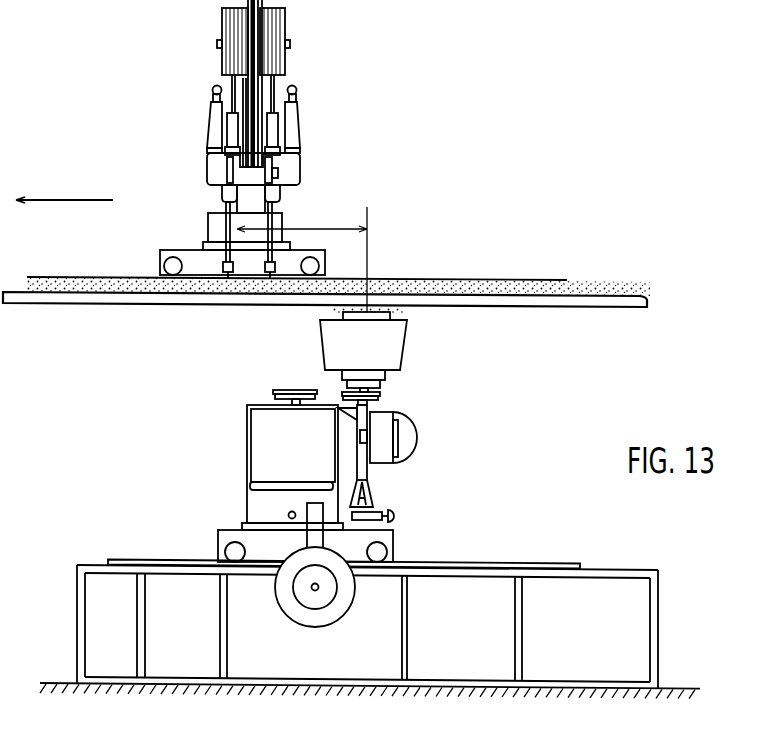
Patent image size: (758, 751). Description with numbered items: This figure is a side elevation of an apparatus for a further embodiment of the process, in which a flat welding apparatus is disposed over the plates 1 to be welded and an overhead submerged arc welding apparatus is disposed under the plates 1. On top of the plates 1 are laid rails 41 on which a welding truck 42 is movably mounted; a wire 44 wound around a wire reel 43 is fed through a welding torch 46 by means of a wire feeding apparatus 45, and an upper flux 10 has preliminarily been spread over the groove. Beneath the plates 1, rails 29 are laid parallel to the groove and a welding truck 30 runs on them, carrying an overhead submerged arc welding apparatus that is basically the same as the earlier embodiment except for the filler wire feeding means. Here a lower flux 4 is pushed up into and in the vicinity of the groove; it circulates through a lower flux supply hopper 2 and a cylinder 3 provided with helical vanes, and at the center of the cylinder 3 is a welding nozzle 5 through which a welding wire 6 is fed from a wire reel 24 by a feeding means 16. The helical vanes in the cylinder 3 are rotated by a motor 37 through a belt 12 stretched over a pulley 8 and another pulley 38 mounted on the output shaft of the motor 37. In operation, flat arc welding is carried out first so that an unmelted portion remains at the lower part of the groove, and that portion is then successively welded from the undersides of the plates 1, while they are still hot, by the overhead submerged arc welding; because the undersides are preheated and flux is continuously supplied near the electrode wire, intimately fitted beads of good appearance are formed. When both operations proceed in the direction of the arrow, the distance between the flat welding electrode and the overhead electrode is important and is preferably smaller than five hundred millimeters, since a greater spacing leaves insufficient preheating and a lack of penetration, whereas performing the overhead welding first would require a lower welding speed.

The plates to be welded 1 is at (585, 302).
The lower flux supply hopper 2 is at (386, 377).
The cylinder 3 is at (343, 321).
The lower flux 4 is at (400, 312).
The welding nozzle 5 is at (367, 320).
The welding wire 6 is at (363, 527).
The pulley 8 is at (343, 392).
The upper flux 10 is at (188, 282).
The belt 12 is at (320, 392).
The wire feeding means 16 is at (412, 438).
The wire reel 24 is at (282, 592).
The rails 29 is at (160, 560).
The welding truck 30 is at (267, 537).
The motor 37 is at (250, 423).
The pulley 38 is at (280, 388).
The rails 41 is at (425, 280).
The welding truck 42 is at (325, 257).
The wire reel 43 is at (222, 23).
The wire 44 is at (270, 85).
The wire feeding apparatus 45 is at (292, 165).
The welding torch 46 is at (273, 210).